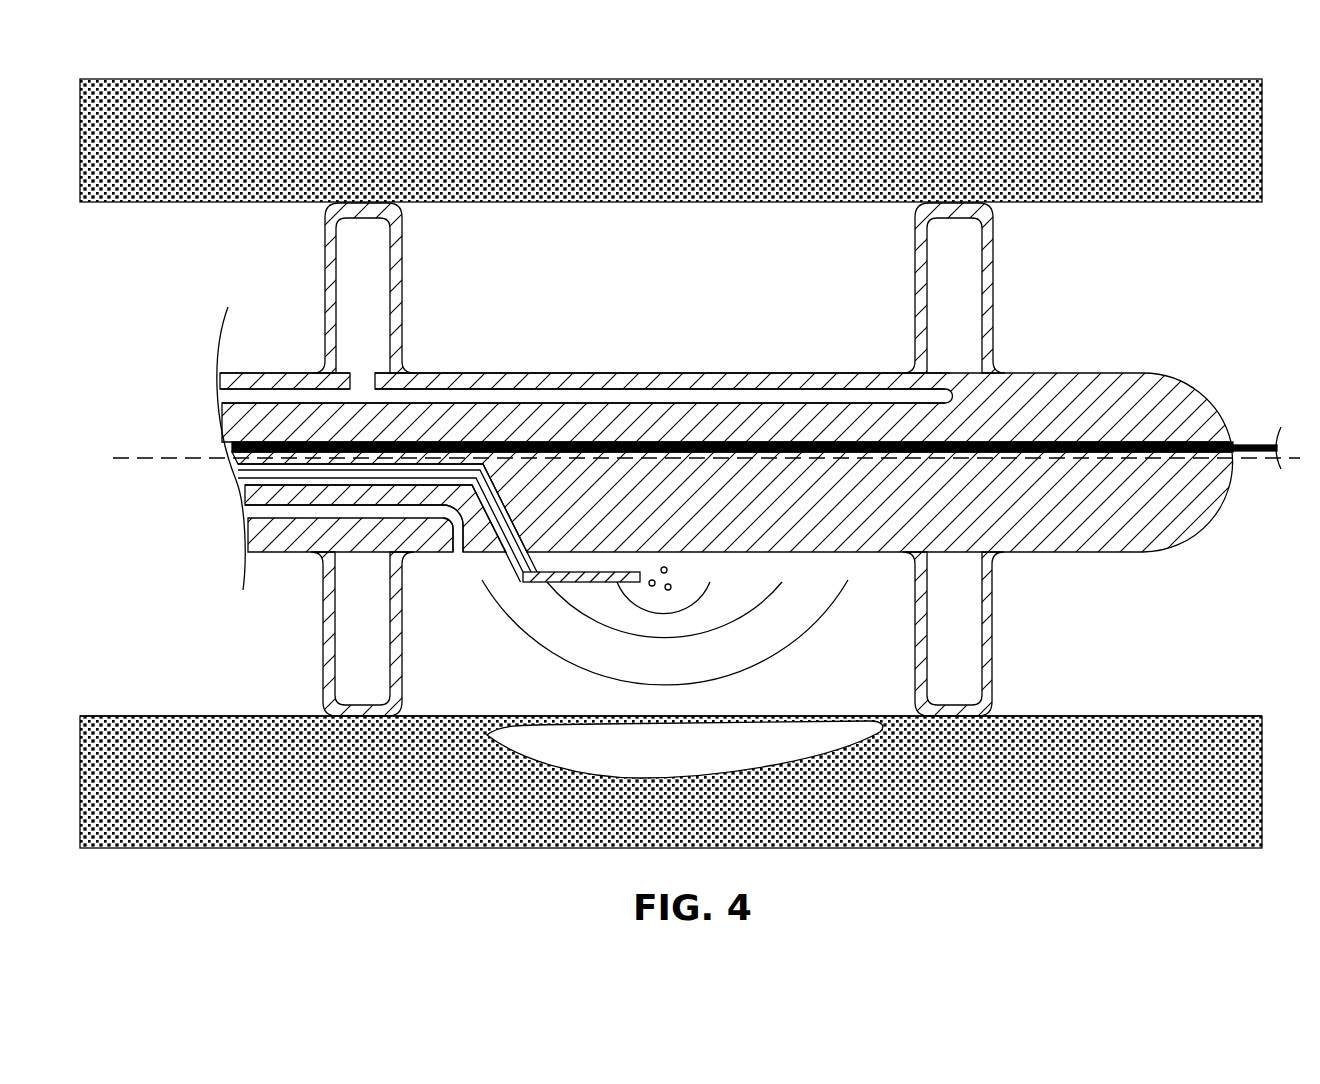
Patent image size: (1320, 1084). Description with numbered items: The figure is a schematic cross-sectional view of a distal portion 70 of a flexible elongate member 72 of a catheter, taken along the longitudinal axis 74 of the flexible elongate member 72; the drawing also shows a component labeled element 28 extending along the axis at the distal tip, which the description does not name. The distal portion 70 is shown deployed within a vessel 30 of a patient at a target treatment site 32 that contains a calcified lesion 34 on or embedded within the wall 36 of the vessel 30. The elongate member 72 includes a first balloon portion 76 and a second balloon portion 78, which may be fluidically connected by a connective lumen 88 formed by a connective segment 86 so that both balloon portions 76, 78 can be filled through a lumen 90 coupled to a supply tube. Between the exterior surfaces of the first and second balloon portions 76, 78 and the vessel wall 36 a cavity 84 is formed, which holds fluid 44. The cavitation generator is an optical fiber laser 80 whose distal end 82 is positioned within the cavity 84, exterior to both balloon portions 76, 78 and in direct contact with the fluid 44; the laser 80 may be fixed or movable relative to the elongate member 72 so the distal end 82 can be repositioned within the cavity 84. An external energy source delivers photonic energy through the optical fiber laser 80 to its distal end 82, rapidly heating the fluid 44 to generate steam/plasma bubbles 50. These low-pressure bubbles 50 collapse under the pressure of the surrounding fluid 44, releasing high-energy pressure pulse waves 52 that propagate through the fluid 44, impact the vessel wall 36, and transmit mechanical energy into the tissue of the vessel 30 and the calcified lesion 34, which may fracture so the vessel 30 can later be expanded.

The wire 28 is at (1246, 444).
The vessel 30 is at (130, 735).
The target treatment site 32 is at (544, 692).
The calcified lesion 34 is at (712, 757).
The vessel wall 36 is at (233, 707).
The fluid 44 is at (440, 597).
The steam/plasma bubbles 50 is at (652, 586).
The pressure pulse wave 52 is at (752, 684).
The distal portion 70 is at (266, 280).
The flexible elongate member 72 is at (1117, 362).
The longitudinal axis 74 is at (133, 457).
The first balloon portion 76 is at (335, 258).
The second balloon portion 78 is at (922, 275).
The optical fiber laser 80 is at (507, 593).
The distal end 82 is at (640, 583).
The cavity 84 is at (553, 283).
The connective segment 86 is at (542, 362).
The connective lumen 88 is at (752, 390).
The lumen 90 is at (212, 398).